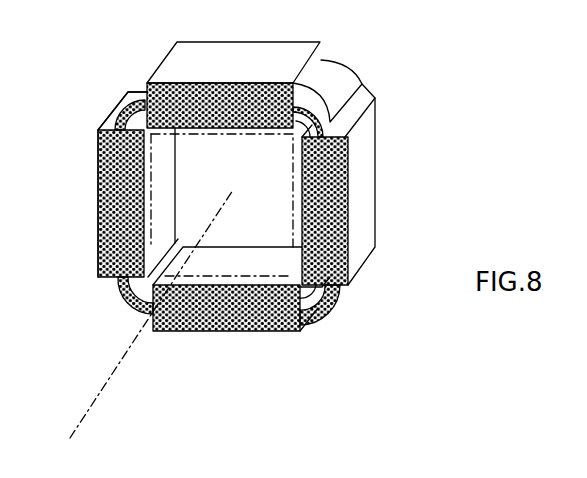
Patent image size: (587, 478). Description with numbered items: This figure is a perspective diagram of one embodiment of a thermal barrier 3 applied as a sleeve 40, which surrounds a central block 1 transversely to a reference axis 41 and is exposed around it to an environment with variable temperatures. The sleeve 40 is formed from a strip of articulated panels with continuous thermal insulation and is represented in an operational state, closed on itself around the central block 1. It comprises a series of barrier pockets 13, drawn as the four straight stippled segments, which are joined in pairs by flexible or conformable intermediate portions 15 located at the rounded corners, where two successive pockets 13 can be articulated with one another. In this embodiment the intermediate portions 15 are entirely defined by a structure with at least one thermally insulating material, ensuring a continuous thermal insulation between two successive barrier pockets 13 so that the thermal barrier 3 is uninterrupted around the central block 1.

The central block 1 is at (259, 236).
The thermal barrier 3 is at (297, 224).
The barrier pockets 13 is at (360, 170).
The intermediate portions 15 is at (137, 81).
The sleeve 40 is at (97, 245).
The reference axis 41 is at (113, 363).